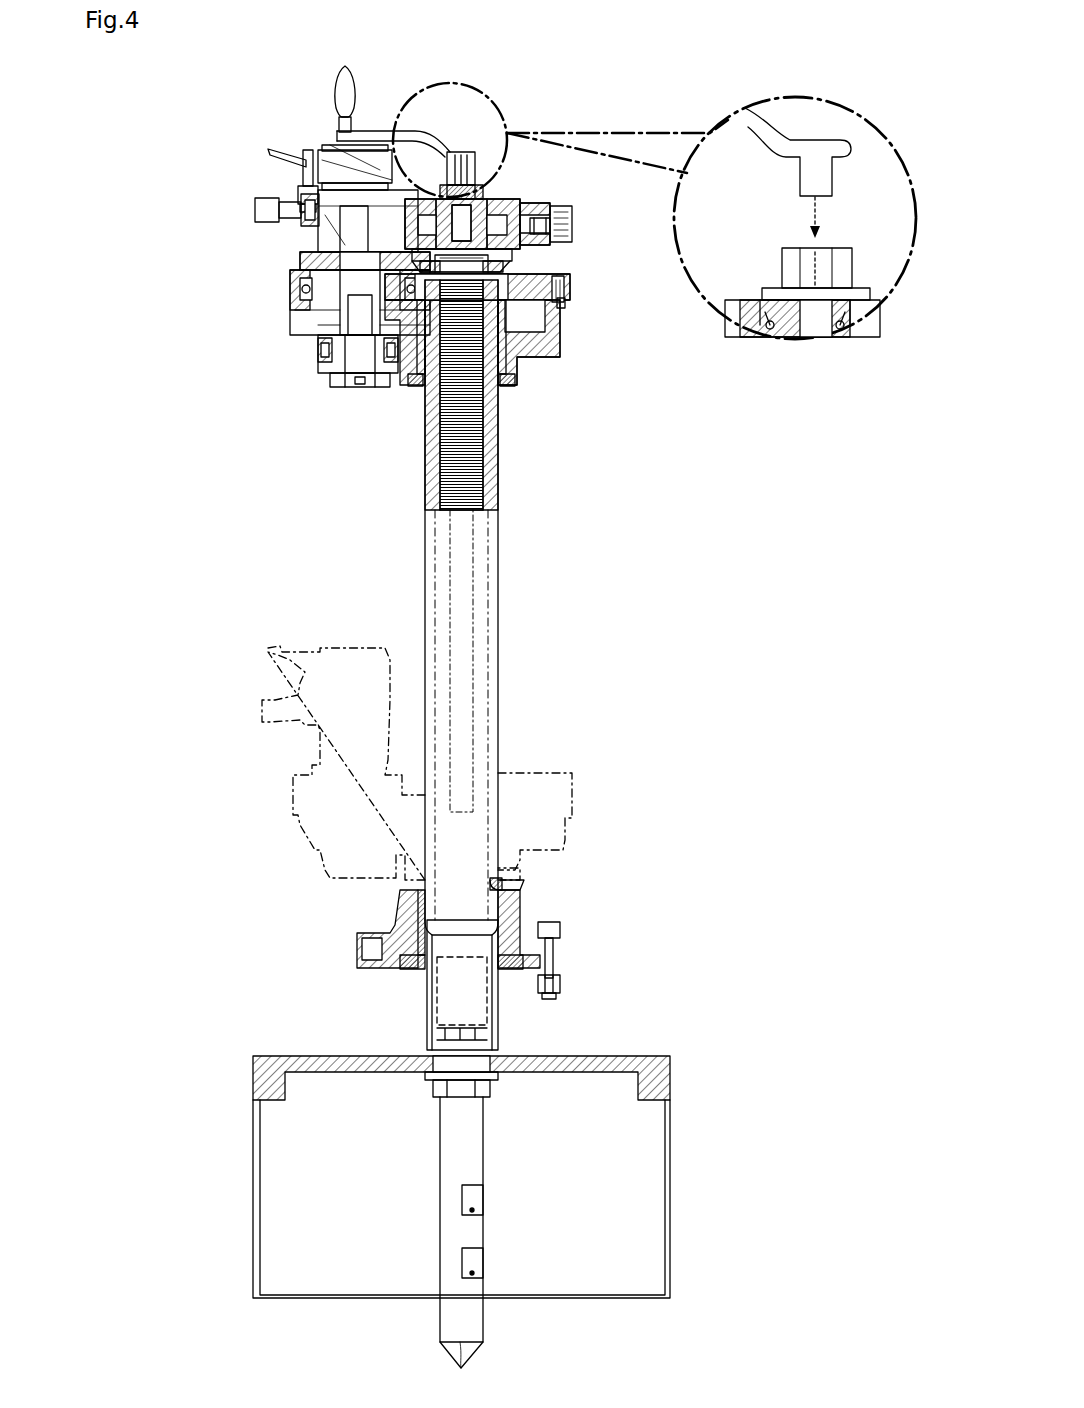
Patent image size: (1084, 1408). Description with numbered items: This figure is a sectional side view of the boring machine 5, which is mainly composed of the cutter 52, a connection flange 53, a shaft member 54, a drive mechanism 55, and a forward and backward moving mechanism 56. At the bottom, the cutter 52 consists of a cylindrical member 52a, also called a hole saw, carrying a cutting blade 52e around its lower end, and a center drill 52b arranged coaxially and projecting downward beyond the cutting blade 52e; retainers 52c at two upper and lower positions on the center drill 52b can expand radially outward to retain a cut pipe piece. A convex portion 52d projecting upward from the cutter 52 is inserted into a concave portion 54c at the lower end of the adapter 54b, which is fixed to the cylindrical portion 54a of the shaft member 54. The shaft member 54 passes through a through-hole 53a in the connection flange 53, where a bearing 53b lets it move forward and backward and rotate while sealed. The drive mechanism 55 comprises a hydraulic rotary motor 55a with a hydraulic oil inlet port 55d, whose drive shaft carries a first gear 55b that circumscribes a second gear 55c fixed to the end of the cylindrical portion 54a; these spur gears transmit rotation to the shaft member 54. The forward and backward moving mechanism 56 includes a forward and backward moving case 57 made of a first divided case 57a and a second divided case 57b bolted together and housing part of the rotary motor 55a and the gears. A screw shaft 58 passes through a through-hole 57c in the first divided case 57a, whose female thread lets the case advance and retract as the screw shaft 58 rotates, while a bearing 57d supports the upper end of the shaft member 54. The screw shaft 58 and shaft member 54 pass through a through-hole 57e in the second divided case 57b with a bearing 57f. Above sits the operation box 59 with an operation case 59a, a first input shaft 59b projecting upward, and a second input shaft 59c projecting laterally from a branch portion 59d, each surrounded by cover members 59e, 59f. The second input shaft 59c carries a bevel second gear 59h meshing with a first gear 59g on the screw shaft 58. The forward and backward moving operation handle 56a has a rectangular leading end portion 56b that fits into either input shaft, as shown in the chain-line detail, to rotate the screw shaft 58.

The boring machine 5 is at (525, 72).
The cutter 52 is at (772, 1065).
The cylindrical member 52a is at (656, 1067).
The center drill 52b is at (470, 1288).
The retainer 52c is at (468, 1272).
The convex portion 52d is at (438, 1008).
The cutting blade 52e is at (254, 1297).
The connection flange 53 is at (530, 905).
The through-hole 53a is at (505, 880).
The bearing 53b is at (560, 940).
The shaft member 54 is at (237, 890).
The cylindrical portion 54a is at (432, 828).
The adapter 54b is at (430, 1007).
The concave portion 54c is at (505, 982).
The drive mechanism 55 is at (198, 242).
The rotary motor 55a is at (305, 240).
The first gear 55b is at (305, 330).
The second gear 55c is at (315, 350).
The hydraulic oil inlet port 55d is at (255, 208).
The forward and backward moving mechanism 56 is at (461, 135).
The forward and backward moving operation handle 56a is at (342, 75).
The leading end portion 56b is at (805, 178).
The forward and backward moving case 57 is at (650, 293).
The first divided case 57a is at (572, 292).
The second divided case 57b is at (560, 340).
The through-hole 57c is at (505, 262).
The bearing 57d is at (506, 386).
The through-hole 57e is at (432, 402).
The bearing 57f is at (400, 378).
The screw shaft 58 is at (470, 405).
The operation box 59 is at (392, 152).
The operation case 59a is at (515, 198).
The first input shaft 59b is at (478, 192).
The second input shaft 59c is at (548, 235).
The branch portion 59d is at (505, 200).
The cover member 59e is at (447, 175).
The cover member 59f is at (560, 210).
The first gear 59g is at (305, 190).
The second gear 59h is at (300, 160).